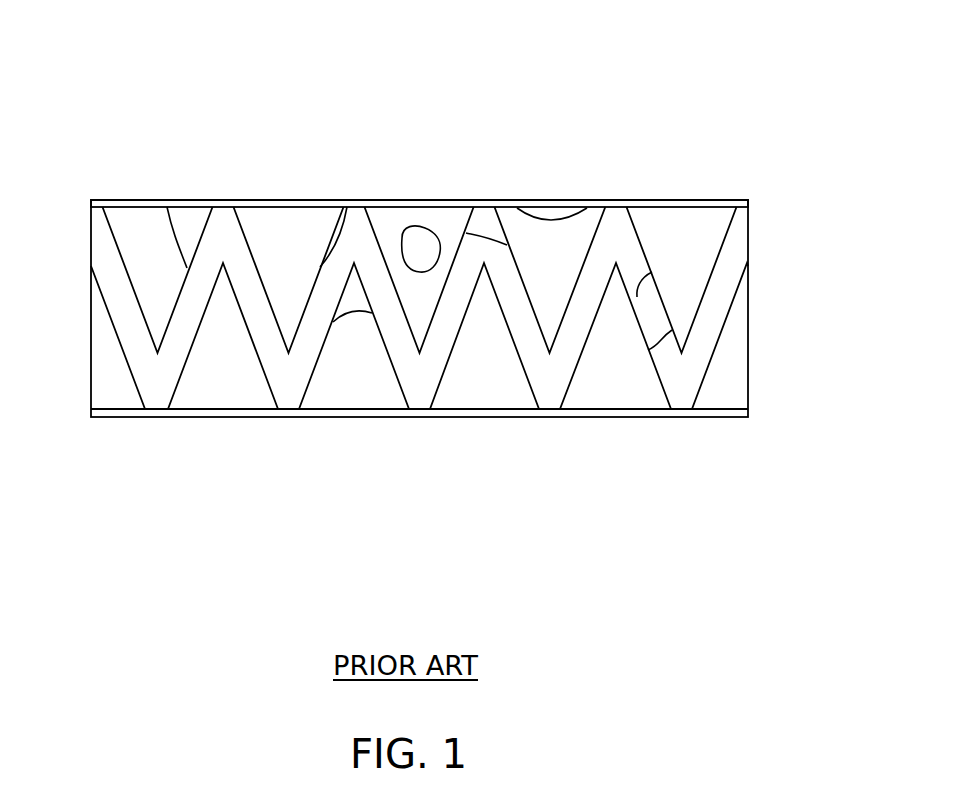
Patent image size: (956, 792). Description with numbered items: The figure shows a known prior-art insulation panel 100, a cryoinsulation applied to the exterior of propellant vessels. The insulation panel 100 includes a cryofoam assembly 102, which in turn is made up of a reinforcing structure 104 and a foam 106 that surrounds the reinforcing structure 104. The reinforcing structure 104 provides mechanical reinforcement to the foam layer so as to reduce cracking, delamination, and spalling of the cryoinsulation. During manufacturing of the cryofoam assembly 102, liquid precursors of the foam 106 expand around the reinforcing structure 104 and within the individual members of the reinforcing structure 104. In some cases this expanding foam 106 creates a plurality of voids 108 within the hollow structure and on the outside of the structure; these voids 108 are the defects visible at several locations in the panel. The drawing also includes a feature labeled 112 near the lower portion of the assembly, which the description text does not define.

The insulation panel 100 is at (93, 128).
The cryofoam assembly 102 is at (703, 223).
The reinforcing structure 104 is at (733, 308).
The foam 106 is at (737, 348).
The voids 108 is at (185, 217).
The crack defect 112 is at (350, 312).